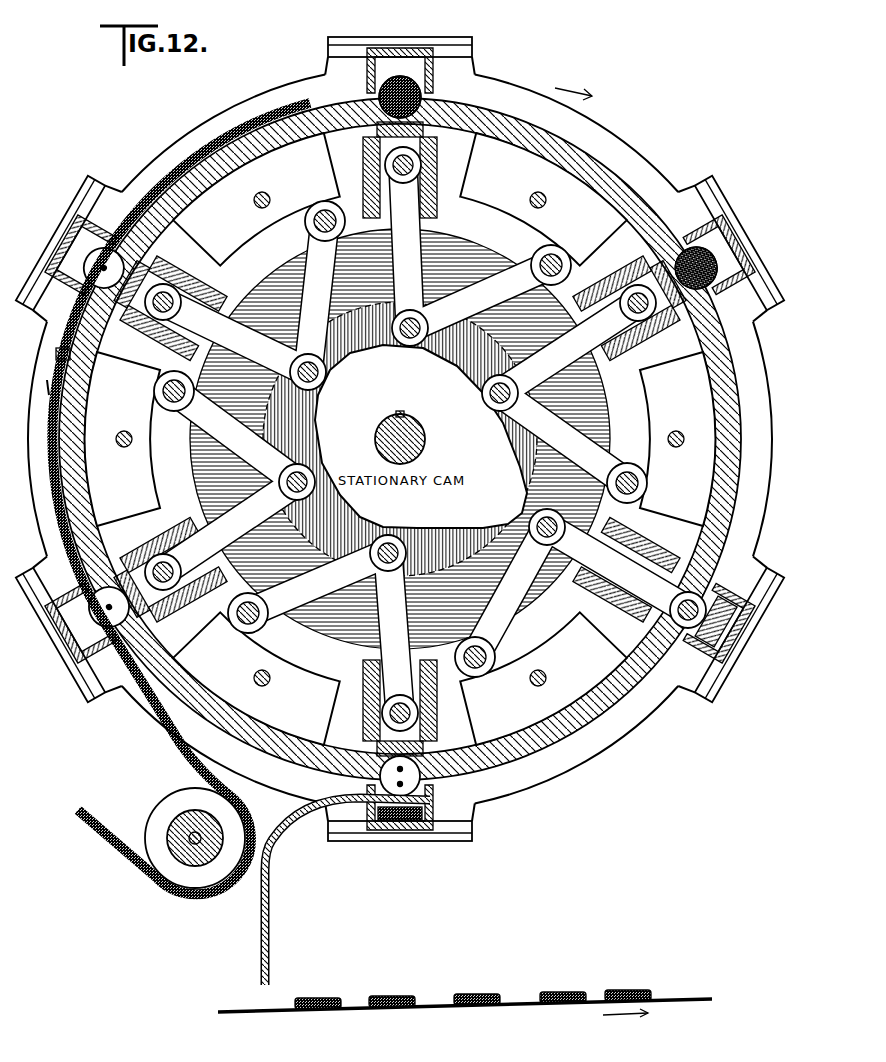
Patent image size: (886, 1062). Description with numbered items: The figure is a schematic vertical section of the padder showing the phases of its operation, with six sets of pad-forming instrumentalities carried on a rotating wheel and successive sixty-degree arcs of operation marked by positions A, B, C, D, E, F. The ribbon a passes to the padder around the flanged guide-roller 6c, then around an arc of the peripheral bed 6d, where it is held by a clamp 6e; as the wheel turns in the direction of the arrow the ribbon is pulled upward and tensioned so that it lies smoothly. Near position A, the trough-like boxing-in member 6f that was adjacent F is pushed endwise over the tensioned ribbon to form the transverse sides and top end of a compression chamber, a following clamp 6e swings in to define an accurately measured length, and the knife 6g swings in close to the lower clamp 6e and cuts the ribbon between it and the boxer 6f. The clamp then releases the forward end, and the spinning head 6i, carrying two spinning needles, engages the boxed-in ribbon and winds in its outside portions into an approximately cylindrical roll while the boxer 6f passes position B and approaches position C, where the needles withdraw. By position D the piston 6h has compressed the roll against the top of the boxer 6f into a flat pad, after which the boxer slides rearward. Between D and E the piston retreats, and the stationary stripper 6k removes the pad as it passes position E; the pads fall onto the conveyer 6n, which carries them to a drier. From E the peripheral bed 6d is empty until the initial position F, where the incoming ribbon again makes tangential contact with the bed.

The peripheral bed 6d is at (72, 501).
The trough-like boxing-in member 6f is at (100, 234).
The knife 6g is at (56, 356).
The clamp 6e is at (56, 382).
The piston 6h is at (418, 741).
The spinning head 6i is at (82, 235).
The stationary stripper 6k is at (270, 904).
The flanged guide-roller 6c is at (190, 885).
The conveyer 6n is at (275, 1018).
The strip a is at (110, 833).
The position A is at (35, 232).
The position B is at (399, 22).
The position C is at (759, 245).
The position D is at (750, 646).
The position E is at (392, 855).
The position F is at (36, 640).